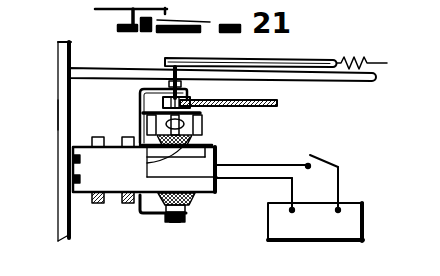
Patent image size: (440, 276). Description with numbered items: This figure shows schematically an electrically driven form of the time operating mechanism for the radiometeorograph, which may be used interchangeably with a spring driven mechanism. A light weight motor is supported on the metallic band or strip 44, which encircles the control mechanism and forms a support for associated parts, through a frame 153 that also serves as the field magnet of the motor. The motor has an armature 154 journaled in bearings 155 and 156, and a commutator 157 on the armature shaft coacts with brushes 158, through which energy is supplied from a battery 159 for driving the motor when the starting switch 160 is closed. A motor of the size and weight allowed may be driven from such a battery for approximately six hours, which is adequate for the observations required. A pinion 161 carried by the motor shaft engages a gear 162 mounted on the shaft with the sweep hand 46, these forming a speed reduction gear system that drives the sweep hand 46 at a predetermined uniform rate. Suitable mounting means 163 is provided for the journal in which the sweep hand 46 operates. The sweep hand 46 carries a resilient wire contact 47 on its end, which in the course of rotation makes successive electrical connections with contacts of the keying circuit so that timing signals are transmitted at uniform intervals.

The metallic band or strip 44 is at (58, 129).
The sweep hand 46 is at (298, 62).
The resilient wire contact 47 is at (381, 62).
The frame 153 is at (207, 171).
The armature 154 is at (192, 206).
The bearing 155 is at (160, 218).
The bearing 156 is at (181, 99).
The commutator 157 is at (200, 121).
The brushes 158 is at (143, 149).
The battery 159 is at (337, 223).
The starting switch 160 is at (318, 156).
The pinion 161 is at (71, 117).
The gear 162 is at (268, 103).
The mounting means 163 is at (85, 70).